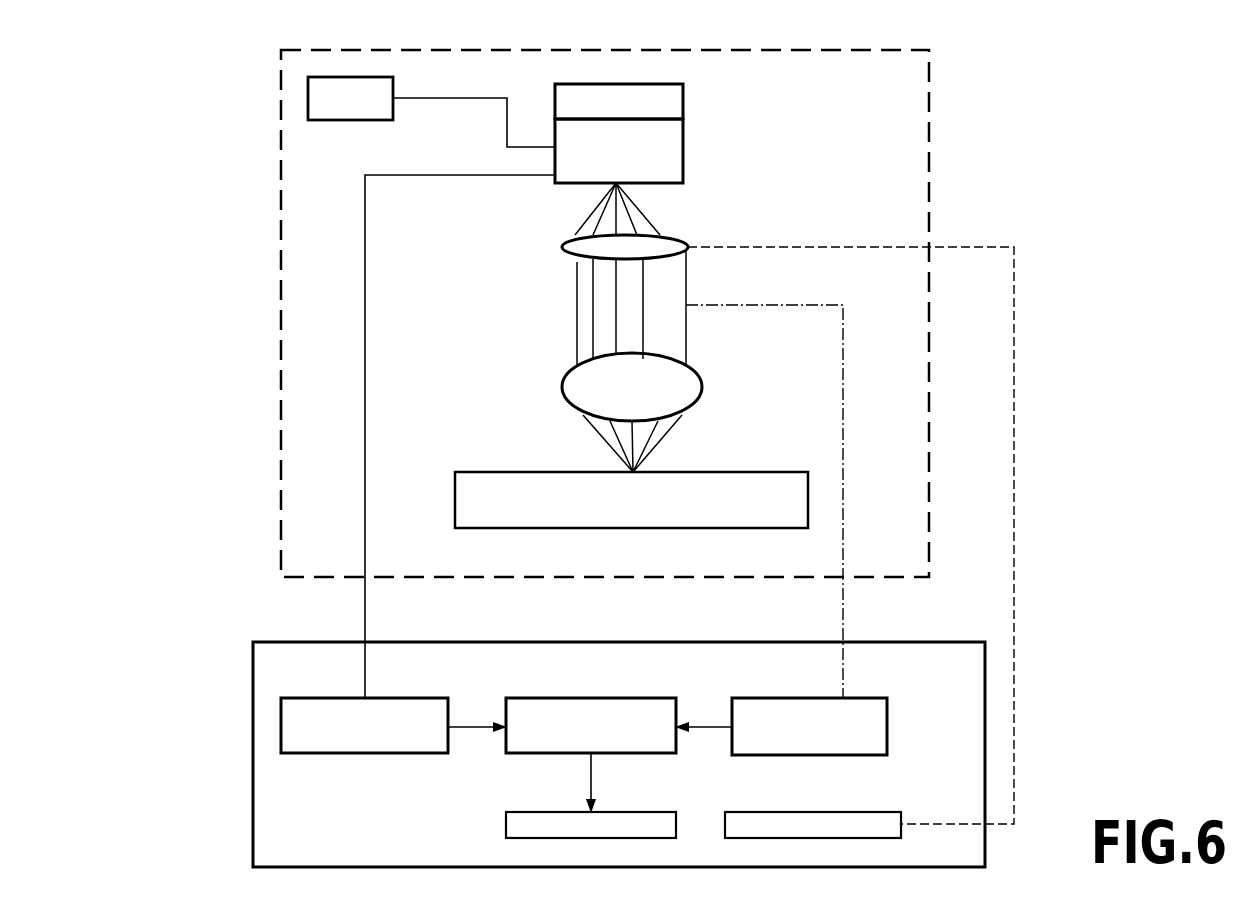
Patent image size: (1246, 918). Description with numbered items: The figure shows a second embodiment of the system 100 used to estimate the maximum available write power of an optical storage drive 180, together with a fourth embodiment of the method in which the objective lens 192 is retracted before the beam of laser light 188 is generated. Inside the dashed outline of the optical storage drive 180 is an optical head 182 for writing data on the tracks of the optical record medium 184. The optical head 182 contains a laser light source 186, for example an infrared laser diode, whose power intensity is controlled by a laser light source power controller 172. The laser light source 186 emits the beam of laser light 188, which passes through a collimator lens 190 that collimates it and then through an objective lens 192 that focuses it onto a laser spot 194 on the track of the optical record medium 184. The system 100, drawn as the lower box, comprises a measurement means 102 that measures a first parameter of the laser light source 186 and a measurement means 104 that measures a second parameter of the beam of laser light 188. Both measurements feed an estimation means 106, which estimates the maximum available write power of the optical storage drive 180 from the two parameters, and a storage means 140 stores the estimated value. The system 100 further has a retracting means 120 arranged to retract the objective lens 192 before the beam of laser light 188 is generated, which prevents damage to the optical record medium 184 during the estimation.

The system 100 is at (253, 723).
The measurement means 102 is at (404, 712).
The measurement means 104 is at (768, 706).
The estimation means 106 is at (626, 712).
The retracting means 120 is at (790, 818).
The storage means 140 is at (636, 818).
The laser light source power controller 172 is at (330, 105).
The optical storage drive 180 is at (930, 220).
The optical head 182 is at (648, 104).
The optical record medium 184 is at (509, 500).
The laser light source 186 is at (653, 160).
The beam of laser light 188 is at (635, 202).
The collimator lens 190 is at (563, 240).
The objective lens 192 is at (689, 388).
The laser spot 194 is at (637, 465).